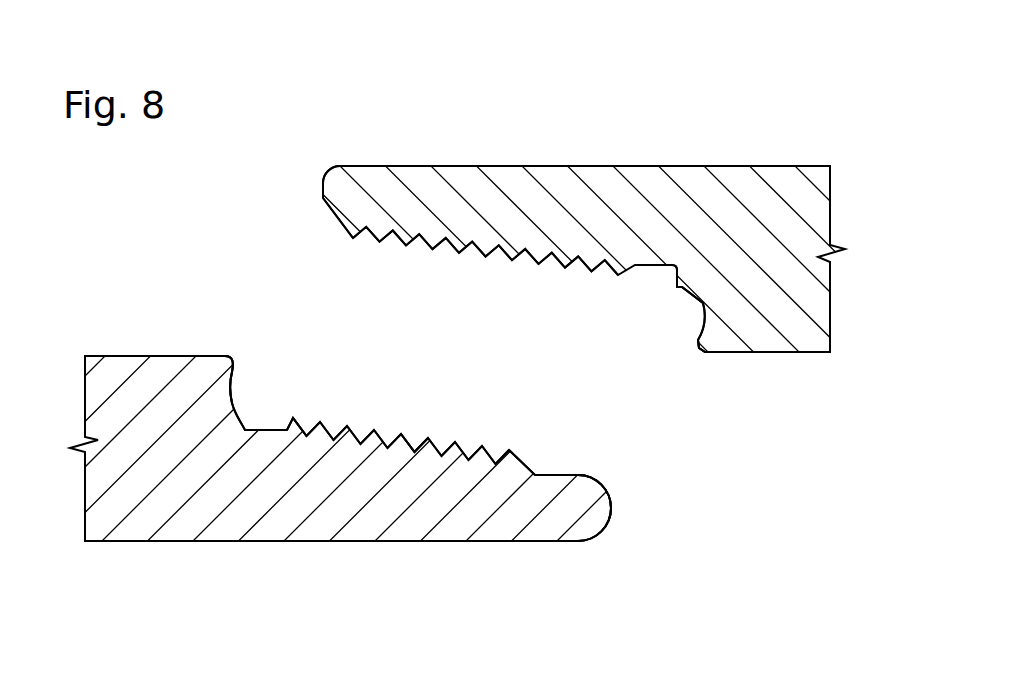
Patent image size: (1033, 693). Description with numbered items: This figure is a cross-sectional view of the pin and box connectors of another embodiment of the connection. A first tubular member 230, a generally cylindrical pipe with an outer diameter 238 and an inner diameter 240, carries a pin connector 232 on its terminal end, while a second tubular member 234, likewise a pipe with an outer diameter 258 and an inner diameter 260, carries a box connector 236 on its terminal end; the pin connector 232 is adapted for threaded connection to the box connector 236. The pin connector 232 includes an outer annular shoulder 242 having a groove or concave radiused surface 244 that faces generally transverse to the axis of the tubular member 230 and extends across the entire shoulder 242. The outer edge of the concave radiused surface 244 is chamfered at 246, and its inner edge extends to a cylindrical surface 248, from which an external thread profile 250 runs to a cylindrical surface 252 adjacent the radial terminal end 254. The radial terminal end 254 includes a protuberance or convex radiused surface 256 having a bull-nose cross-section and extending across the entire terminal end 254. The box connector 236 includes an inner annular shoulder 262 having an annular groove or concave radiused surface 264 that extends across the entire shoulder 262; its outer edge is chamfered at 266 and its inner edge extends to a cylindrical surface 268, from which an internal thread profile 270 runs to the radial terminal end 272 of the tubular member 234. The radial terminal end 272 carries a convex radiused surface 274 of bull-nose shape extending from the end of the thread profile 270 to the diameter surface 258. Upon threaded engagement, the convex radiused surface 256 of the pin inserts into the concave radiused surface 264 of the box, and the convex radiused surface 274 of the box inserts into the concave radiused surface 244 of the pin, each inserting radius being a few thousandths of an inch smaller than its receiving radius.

The first tubular member 230 is at (178, 528).
The pin connector 232 is at (492, 428).
The second tubular member 234 is at (815, 306).
The box connector 236 is at (420, 266).
The outer diameter 238 is at (140, 356).
The inner diameter 240 is at (365, 542).
The outer annular shoulder 242 is at (266, 380).
The concave radiused surface 244 is at (238, 385).
The chamfer 246 is at (230, 357).
The cylindrical surface 248 is at (300, 426).
The external thread profile 250 is at (410, 443).
The cylindrical surface 252 is at (562, 476).
The radial terminal end 254 is at (626, 527).
The convex radiused surface 256 is at (612, 504).
The outer diameter 258 is at (688, 166).
The inner diameter 260 is at (763, 352).
The inner annular shoulder 262 is at (688, 328).
The concave radiused surface 264 is at (697, 300).
The chamfer 266 is at (700, 348).
The cylindrical surface 268 is at (662, 268).
The internal thread profile 270 is at (462, 256).
The radial terminal end 272 is at (320, 177).
The convex radiused surface 274 is at (323, 198).